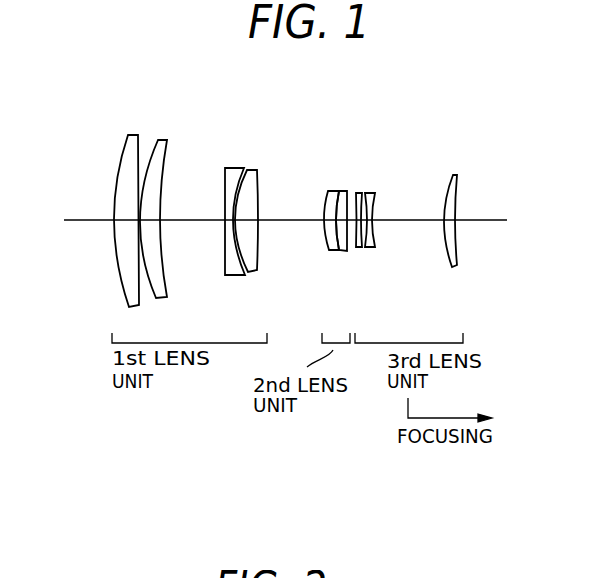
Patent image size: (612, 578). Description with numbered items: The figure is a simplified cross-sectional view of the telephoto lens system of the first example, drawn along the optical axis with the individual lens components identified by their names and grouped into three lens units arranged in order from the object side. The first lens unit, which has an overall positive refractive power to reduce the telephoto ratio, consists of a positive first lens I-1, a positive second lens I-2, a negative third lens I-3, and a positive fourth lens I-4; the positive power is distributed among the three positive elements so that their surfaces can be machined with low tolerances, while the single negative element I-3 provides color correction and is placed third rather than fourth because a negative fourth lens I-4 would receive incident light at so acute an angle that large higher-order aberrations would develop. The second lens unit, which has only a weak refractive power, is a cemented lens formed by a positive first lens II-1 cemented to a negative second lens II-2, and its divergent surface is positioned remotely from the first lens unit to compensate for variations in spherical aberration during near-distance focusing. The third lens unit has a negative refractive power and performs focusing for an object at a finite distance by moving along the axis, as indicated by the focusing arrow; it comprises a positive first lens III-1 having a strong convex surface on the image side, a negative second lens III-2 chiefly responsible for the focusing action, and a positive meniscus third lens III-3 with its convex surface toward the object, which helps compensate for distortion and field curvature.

The positive first lens I-1 is at (132, 135).
The positive second lens I-2 is at (162, 141).
The negative third lens I-3 is at (232, 167).
The positive fourth lens I-4 is at (253, 169).
The positive first lens II-1 is at (330, 190).
The negative second lens II-2 is at (340, 190).
The positive first lens III-1 is at (360, 192).
The negative second lens III-2 is at (370, 192).
The positive meniscus third lens III-3 is at (453, 176).